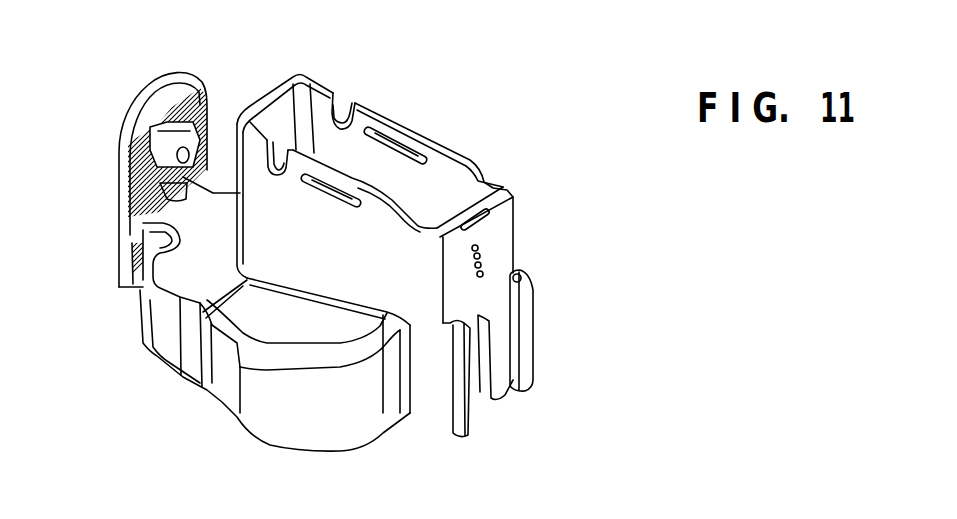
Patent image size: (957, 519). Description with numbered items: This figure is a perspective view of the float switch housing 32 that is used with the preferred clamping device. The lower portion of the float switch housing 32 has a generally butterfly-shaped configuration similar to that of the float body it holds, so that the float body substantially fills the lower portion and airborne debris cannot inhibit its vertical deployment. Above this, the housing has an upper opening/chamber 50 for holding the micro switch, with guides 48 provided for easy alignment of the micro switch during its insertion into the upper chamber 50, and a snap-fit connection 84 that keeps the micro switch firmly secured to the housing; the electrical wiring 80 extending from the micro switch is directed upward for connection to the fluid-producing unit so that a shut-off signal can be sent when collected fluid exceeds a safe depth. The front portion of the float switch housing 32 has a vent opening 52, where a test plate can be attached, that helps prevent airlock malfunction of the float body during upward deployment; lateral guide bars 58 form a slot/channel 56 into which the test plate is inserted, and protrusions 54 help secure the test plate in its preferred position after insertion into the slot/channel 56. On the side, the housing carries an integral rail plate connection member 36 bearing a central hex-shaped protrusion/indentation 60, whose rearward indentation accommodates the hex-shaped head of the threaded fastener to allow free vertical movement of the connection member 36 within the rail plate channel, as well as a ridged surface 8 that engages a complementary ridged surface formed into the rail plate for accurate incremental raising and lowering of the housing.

The rail plate connection member 36 is at (187, 93).
The hex-shaped protrusion/indentation 60 is at (150, 160).
The ridged surface 8 is at (131, 240).
The upper opening/chamber 50 is at (445, 185).
The guides 48 is at (280, 141).
The snap-fit connection 84 is at (345, 183).
The protrusions 54 is at (495, 252).
The slot/channel 56 is at (500, 285).
The lateral guide bars 58 is at (463, 360).
The vent opening 52 is at (491, 408).
The float switch housing 32 is at (337, 420).
The electrical wiring 80 is at (741, 517).